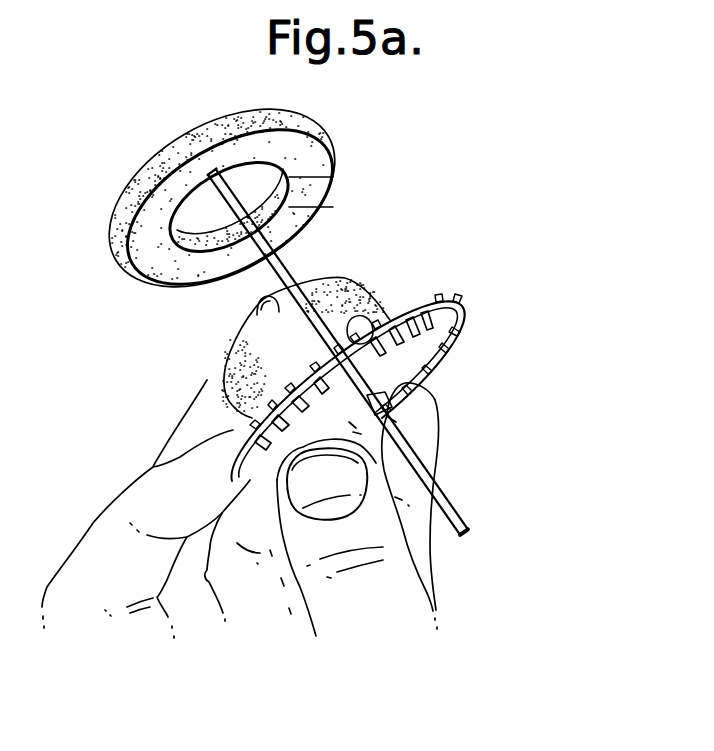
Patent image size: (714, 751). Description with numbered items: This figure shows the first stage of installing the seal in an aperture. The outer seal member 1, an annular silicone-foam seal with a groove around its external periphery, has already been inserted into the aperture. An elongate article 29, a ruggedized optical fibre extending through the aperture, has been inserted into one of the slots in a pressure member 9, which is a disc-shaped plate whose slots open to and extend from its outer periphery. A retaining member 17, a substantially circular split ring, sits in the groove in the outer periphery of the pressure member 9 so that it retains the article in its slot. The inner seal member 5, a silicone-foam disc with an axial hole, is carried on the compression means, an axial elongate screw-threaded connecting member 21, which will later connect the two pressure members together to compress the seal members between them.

The outer seal member 1 is at (319, 133).
The elongate article 29 is at (292, 262).
The inner seal member 5 is at (230, 357).
The screw-threaded connecting member 21 is at (255, 305).
The pressure member 9 is at (443, 358).
The retaining member 17 is at (462, 318).